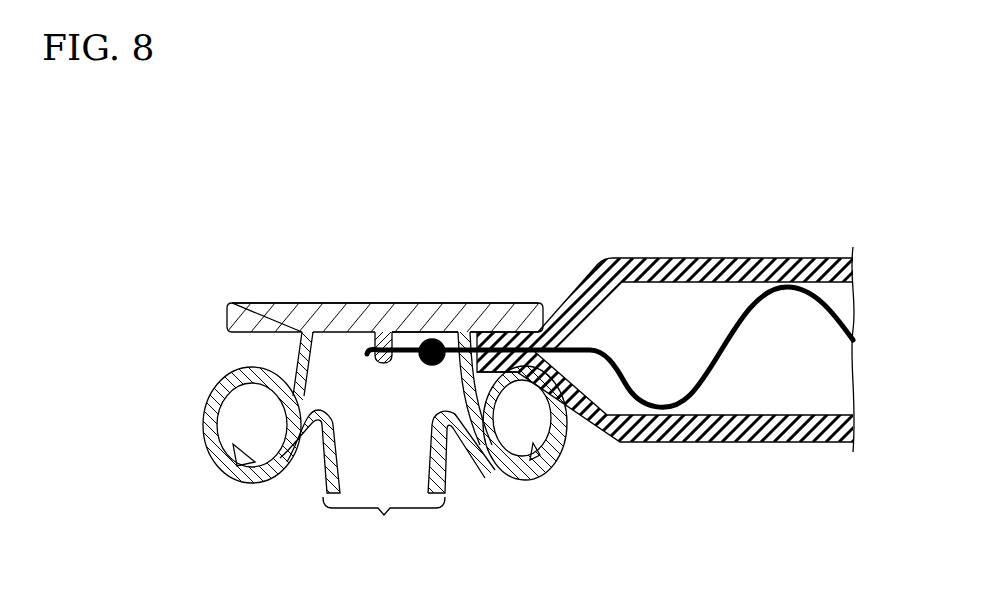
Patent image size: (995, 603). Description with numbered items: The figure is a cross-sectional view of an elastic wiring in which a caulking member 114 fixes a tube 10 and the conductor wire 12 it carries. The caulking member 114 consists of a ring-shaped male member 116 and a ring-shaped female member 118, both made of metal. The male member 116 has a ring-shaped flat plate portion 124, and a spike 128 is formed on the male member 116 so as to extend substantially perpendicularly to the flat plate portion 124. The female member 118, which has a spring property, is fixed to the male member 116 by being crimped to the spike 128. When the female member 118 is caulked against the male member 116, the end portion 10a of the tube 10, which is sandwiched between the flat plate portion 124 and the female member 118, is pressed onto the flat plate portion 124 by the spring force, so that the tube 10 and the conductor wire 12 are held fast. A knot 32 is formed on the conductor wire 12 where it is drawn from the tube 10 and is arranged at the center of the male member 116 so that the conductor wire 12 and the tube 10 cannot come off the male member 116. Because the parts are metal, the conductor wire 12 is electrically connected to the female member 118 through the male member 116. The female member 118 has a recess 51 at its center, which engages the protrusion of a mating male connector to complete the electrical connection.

The tube 10 is at (756, 270).
The end portion of the tube 10a is at (502, 322).
The conductor wire 12 is at (796, 290).
The knot 32 is at (432, 338).
The recess 51 is at (387, 480).
The caulking member 114 is at (374, 272).
The ring-shaped male member 116 is at (300, 304).
The ring-shaped female member 118 is at (208, 441).
The flat plate portion 124 is at (500, 311).
The spike 128 is at (300, 355).